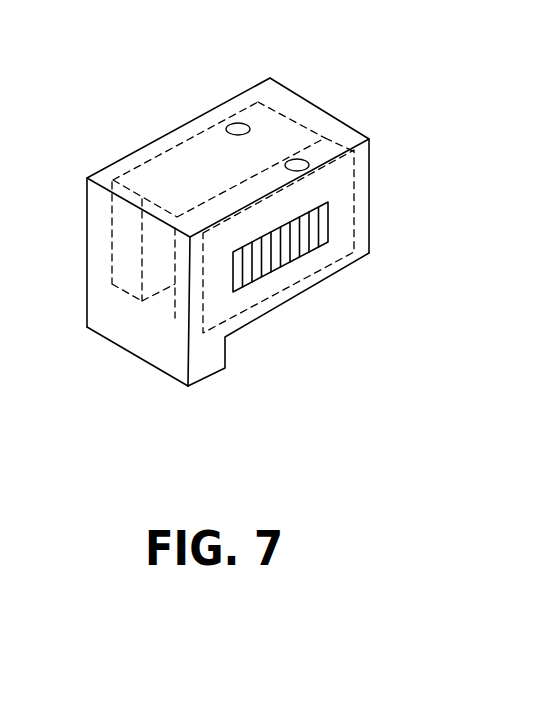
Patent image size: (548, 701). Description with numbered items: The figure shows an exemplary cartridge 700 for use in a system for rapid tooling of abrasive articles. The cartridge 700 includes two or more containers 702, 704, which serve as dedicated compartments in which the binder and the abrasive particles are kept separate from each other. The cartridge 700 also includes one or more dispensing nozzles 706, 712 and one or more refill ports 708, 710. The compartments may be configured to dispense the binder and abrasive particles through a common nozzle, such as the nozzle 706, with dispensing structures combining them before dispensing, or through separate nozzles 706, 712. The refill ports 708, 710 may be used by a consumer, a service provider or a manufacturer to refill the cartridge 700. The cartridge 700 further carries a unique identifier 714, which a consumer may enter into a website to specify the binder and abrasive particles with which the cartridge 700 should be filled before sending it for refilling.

The cartridge 700 is at (114, 163).
The container 702 is at (266, 117).
The container 704 is at (328, 147).
The dispensing nozzle 706 is at (130, 353).
The refill port 708 is at (238, 122).
The refill port 710 is at (295, 156).
The dispensing nozzle 712 is at (168, 377).
The unique identifier 714 is at (287, 262).